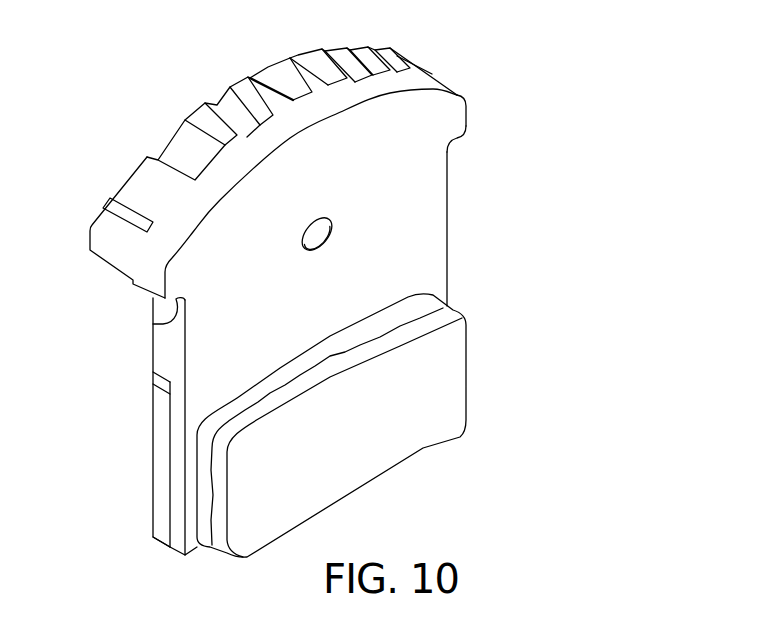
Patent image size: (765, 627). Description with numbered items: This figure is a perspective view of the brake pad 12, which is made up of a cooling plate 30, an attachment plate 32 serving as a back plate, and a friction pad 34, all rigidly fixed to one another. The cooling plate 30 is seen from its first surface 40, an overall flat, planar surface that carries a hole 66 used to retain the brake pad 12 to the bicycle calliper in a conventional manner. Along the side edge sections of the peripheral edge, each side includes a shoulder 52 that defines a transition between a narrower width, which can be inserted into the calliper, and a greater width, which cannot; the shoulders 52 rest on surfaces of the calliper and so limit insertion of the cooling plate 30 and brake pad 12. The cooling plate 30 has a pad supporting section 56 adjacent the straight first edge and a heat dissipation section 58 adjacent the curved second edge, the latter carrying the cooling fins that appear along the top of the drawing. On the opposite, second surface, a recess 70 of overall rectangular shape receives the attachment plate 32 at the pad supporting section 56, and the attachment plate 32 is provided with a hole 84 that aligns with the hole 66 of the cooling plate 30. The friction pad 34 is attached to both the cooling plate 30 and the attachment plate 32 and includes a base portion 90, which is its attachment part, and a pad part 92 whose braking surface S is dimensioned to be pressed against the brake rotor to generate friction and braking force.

The brake pad 12 is at (130, 95).
The cooling plate 30 is at (418, 232).
The attachment plate 32 is at (162, 435).
The friction pad 34 is at (247, 517).
The first surface 40 is at (230, 333).
The shoulder 52 is at (460, 138).
The pad supporting section 56 is at (175, 552).
The heat dissipation section 58 is at (456, 200).
The hole 66 is at (331, 235).
The recess 70 is at (168, 478).
The hole 84 is at (310, 247).
The base portion 90 is at (410, 300).
The pad part 92 is at (437, 395).
The braking surface S is at (340, 453).